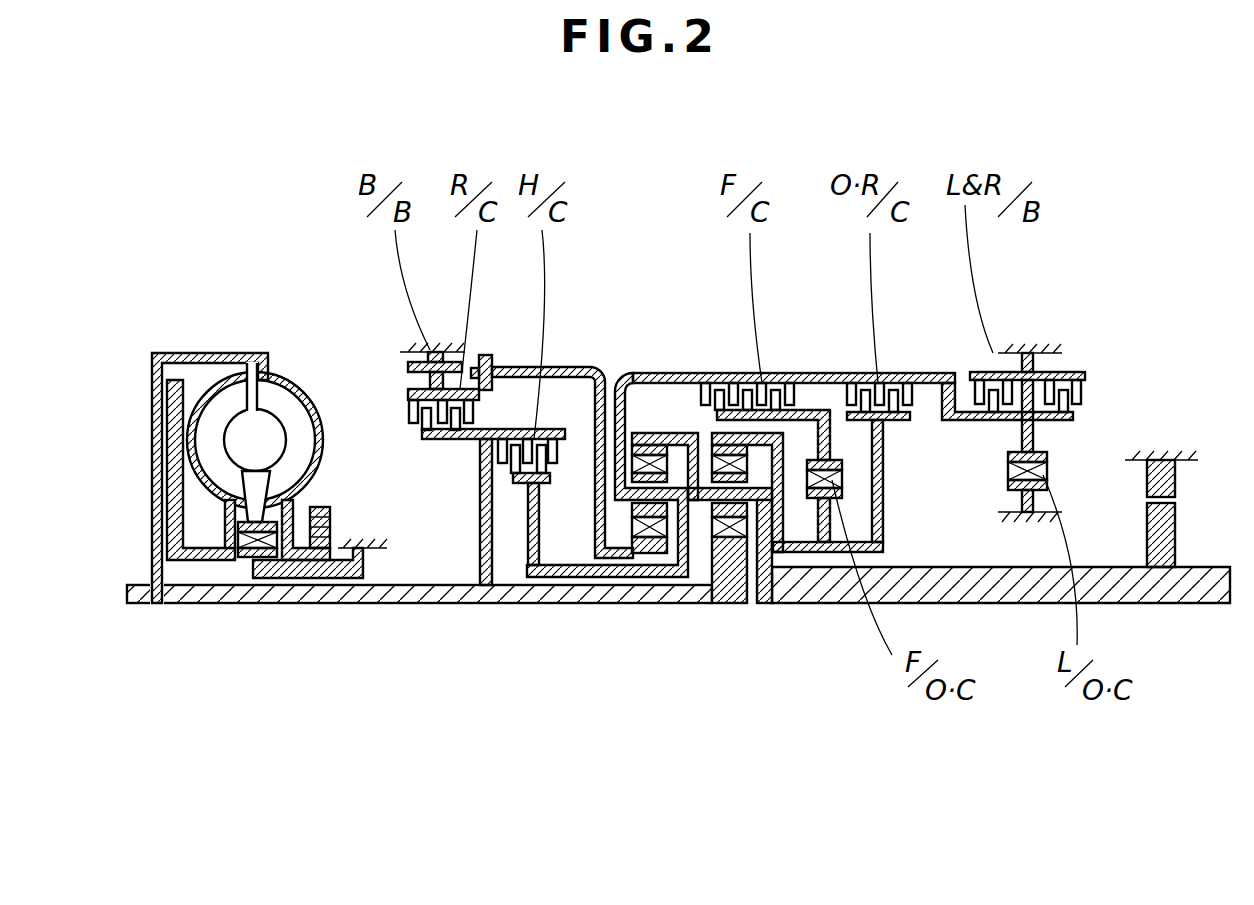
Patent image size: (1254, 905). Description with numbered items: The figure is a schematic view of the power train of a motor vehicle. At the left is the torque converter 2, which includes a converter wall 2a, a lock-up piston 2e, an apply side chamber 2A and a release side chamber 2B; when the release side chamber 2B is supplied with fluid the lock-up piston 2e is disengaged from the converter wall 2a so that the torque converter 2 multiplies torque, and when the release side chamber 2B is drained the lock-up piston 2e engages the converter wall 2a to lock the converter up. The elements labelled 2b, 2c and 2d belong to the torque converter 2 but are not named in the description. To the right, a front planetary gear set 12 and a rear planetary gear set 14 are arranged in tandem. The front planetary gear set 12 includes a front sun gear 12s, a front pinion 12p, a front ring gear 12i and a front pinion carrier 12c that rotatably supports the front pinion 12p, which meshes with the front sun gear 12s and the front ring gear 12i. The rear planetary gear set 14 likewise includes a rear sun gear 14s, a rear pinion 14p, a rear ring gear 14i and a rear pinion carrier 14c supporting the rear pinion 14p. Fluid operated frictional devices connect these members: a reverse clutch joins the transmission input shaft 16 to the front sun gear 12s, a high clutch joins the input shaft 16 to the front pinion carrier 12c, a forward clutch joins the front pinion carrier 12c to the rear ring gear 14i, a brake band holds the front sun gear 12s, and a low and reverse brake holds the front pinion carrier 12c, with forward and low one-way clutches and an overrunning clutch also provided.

The torque converter 2 is at (222, 388).
The converter wall 2a is at (132, 303).
The turbine runner 2b is at (292, 405).
The pump impeller 2c is at (232, 398).
The stator 2d is at (258, 488).
The lock-up piston 2e is at (178, 443).
The apply side chamber 2A is at (245, 368).
The release side chamber 2B is at (168, 488).
The front planetary gear set 12 is at (607, 467).
The front ring gear 12i is at (648, 440).
The front sun gear 12s is at (645, 553).
The front pinion 12p is at (658, 482).
The front pinion carrier 12c is at (683, 530).
The rear planetary gear set 14 is at (768, 483).
The rear ring gear 14i is at (693, 433).
The rear sun gear 14s is at (725, 557).
The rear pinion 14p is at (735, 510).
The rear pinion carrier 14c is at (758, 520).
The transmission input shaft 16 is at (393, 603).